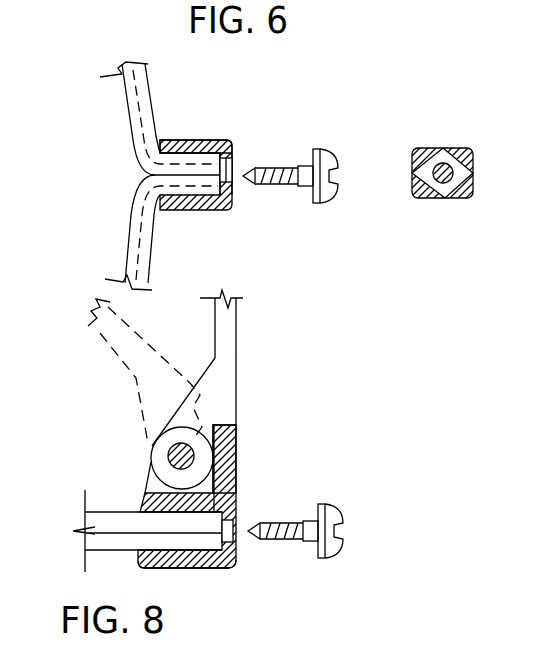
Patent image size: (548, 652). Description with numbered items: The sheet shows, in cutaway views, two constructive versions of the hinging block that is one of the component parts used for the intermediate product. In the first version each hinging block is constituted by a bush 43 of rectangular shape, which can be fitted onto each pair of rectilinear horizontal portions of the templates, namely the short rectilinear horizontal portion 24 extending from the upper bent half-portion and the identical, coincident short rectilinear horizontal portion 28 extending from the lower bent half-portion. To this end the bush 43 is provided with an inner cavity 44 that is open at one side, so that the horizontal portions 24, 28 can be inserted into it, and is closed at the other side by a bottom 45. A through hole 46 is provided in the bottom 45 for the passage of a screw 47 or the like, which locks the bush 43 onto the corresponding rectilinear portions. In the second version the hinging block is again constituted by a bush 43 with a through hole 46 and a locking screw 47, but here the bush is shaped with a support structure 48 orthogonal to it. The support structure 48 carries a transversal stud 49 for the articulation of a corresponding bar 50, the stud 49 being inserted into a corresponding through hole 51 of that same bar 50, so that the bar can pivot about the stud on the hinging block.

In FIG. 6, the short rectilinear horizontal portion 24 is at (172, 168).
In FIG. 6, the short rectilinear horizontal portion 28 is at (195, 190).
In FIG. 6, the bush 43 is at (328, 174).
In FIG. 8, the bush 43 is at (184, 519).
In FIG. 6, the inner cavity 44 is at (233, 150).
In FIG. 6, the bottom 45 is at (231, 150).
In FIG. 8, the bottom 45 is at (229, 566).
In FIG. 6, the through hole 46 is at (233, 178).
In FIG. 8, the through hole 46 is at (236, 522).
In FIG. 6, the screw 47 is at (334, 160).
In FIG. 8, the screw 47 is at (339, 512).
In FIG. 8, the support structure 48 is at (237, 452).
In FIG. 8, the transversal stud 49 is at (165, 430).
In FIG. 8, the bar 50 is at (110, 333).
In FIG. 8, the through hole 51 is at (189, 446).